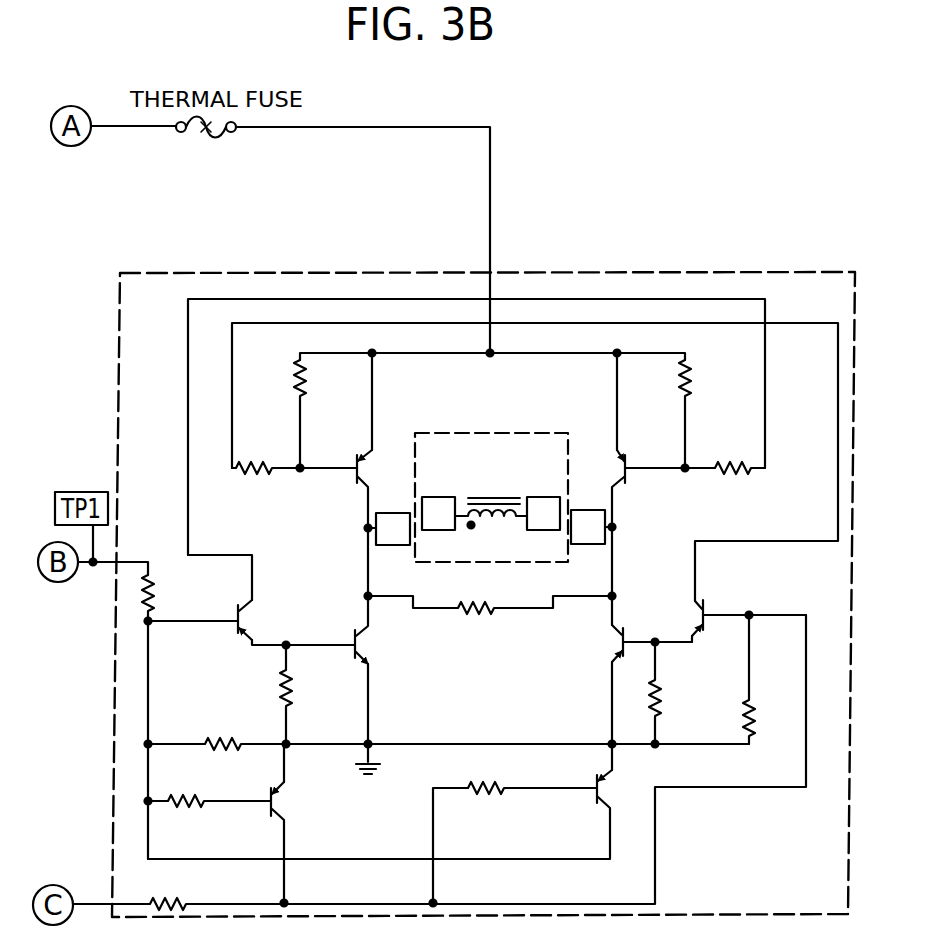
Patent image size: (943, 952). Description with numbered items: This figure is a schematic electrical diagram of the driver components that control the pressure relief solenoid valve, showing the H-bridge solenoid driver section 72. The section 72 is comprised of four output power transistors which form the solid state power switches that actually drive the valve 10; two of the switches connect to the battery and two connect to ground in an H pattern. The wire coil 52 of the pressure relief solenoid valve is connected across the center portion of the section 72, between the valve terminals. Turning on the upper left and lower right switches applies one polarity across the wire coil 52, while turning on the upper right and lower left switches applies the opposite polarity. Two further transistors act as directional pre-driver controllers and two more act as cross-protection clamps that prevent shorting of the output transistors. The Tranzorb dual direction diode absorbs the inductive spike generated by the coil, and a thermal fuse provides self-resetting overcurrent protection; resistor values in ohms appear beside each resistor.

The valve 10 is at (582, 440).
The wire coil 52 is at (520, 496).
The H-bridge section 72 is at (464, 594).